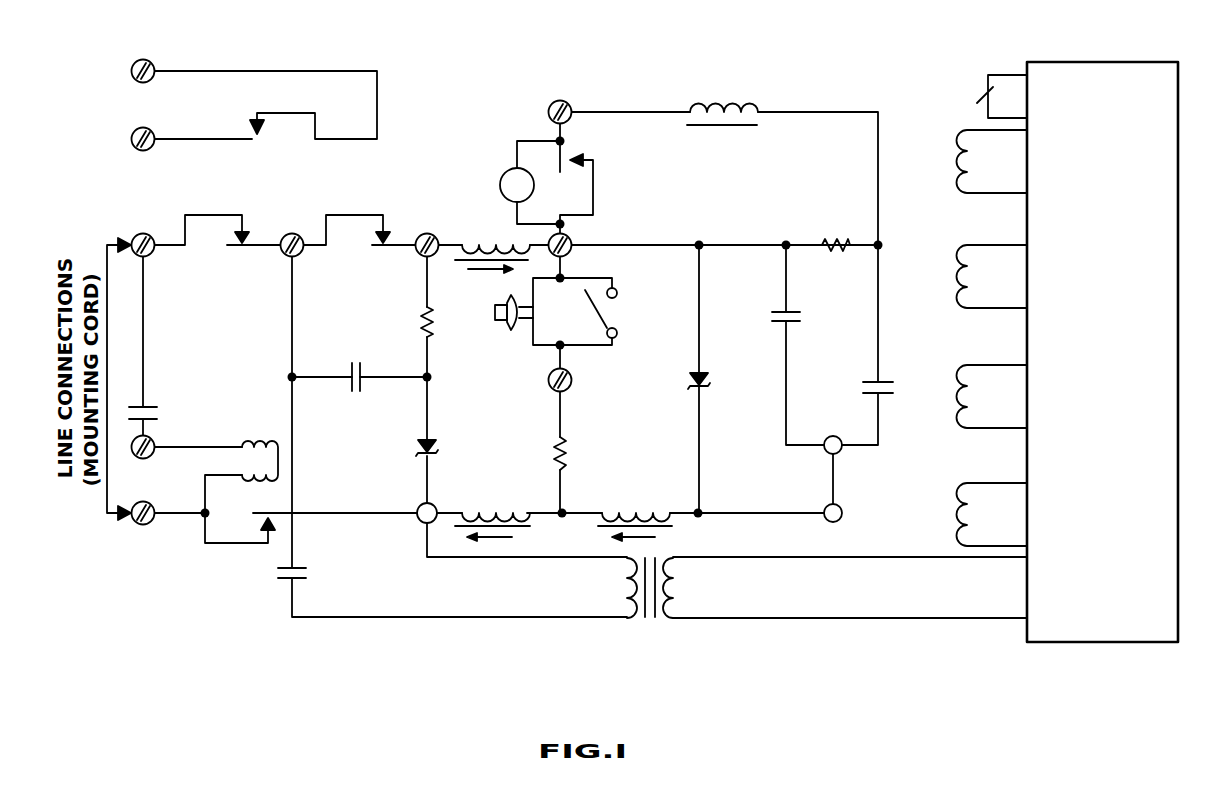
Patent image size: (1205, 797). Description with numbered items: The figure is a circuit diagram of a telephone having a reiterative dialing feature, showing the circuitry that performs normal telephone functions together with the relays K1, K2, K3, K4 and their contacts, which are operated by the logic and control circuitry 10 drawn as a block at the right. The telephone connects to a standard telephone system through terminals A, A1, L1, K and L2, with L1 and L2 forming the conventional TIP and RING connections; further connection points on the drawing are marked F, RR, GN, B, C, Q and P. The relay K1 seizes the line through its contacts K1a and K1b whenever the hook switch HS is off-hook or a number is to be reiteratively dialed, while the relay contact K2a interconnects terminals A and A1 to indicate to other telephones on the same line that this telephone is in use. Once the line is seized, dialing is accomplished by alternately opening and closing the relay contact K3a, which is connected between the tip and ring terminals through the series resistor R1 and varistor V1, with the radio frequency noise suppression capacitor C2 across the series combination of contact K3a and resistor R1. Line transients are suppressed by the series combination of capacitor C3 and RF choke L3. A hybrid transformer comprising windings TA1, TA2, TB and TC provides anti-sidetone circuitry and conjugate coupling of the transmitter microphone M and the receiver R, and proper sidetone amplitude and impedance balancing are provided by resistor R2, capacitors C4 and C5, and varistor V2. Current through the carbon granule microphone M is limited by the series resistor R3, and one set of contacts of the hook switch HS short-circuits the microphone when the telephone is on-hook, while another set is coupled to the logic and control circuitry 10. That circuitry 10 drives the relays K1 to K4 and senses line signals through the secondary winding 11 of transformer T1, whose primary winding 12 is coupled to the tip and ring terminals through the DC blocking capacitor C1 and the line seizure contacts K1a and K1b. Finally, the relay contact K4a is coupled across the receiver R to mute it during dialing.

The logic and control circuitry 10 is at (1088, 60).
The secondary winding 11 is at (673, 622).
The primary winding 12 is at (627, 622).
The terminal A is at (159, 63).
The terminal A1 is at (157, 131).
The relay contact K2a is at (270, 145).
The tip connection TIP is at (108, 235).
The tip terminal L1 is at (145, 231).
The relay contact K1a is at (219, 255).
The terminal F is at (292, 231).
The relay contact K3a is at (363, 255).
The terminal RR is at (436, 235).
The hybrid transformer winding TA1 is at (492, 243).
The receiver R is at (500, 185).
The terminal GN is at (580, 102).
The relay contact K4a is at (603, 189).
The hybrid transformer winding TC is at (722, 102).
The resistor R2 is at (834, 232).
The capacitor C4 is at (806, 327).
The capacitor C5 is at (891, 373).
The varistor V2 is at (716, 372).
The terminal Q is at (842, 437).
The terminal P is at (841, 501).
The hook switch HS is at (806, 206).
The transmitter microphone M is at (508, 323).
The terminal B is at (571, 375).
The series resistor R1 is at (440, 321).
The series resistor R3 is at (580, 453).
The varistor V1 is at (440, 437).
The radio frequency noise suppression capacitor C2 is at (361, 359).
The capacitor C3 is at (160, 399).
The terminal K is at (180, 440).
The RF choke L3 is at (255, 461).
The ring terminal L2 is at (193, 501).
The ring connection RING is at (105, 525).
The relay contact K1b is at (240, 546).
The DC blocking capacitor C1 is at (308, 570).
The terminal C is at (417, 503).
The hybrid transformer winding TA2 is at (492, 512).
The hybrid transformer winding TB is at (635, 512).
The transformer T1 is at (646, 604).
The relay K1 is at (977, 161).
The relay K2 is at (977, 276).
The relay K3 is at (979, 396).
The relay K4 is at (979, 514).